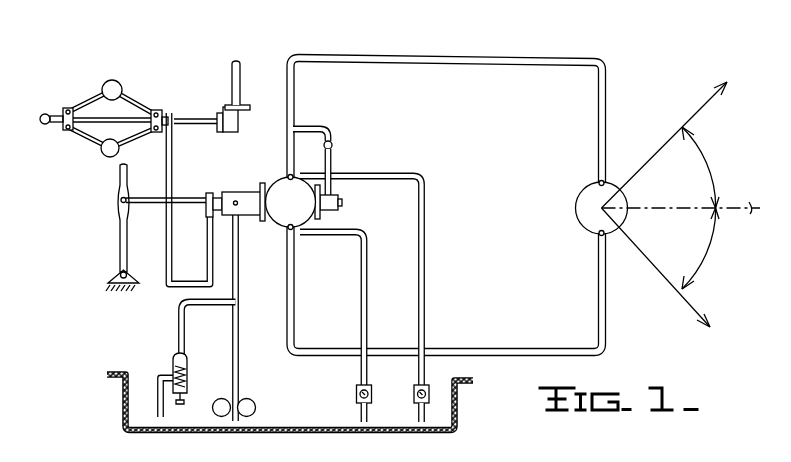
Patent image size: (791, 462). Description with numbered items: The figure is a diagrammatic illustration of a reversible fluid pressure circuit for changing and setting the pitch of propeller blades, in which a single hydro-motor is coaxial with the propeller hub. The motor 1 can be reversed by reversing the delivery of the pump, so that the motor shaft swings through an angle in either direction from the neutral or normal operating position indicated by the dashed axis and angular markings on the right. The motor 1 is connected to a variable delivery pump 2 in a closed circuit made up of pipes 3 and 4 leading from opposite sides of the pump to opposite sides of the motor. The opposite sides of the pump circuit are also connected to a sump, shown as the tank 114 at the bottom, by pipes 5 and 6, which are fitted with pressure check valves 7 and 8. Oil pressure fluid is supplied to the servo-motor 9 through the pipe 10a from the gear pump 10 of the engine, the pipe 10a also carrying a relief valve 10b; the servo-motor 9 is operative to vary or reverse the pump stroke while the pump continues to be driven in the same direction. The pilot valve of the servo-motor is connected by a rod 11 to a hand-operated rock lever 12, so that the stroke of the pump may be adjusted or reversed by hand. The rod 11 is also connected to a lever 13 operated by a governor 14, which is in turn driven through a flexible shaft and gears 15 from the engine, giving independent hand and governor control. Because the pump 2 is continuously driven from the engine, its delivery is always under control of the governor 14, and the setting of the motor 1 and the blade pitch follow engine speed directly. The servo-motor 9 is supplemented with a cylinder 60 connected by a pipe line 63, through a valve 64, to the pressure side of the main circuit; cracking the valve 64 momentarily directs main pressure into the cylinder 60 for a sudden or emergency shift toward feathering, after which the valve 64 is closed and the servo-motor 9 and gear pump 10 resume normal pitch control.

The motor 1 is at (597, 237).
The variable delivery pump 2 is at (291, 202).
The pipe 3 is at (456, 44).
The pipe 4 is at (496, 349).
The pipe 5 is at (367, 300).
The pipe 6 is at (425, 306).
The pressure check valve 7 is at (366, 410).
The pressure check valve 8 is at (424, 410).
The servo-motor 9 is at (243, 192).
The gear pump 10 is at (255, 412).
The pipe 10a is at (238, 273).
The pressure limiting valve 10b is at (172, 364).
The rod 11 is at (194, 205).
The hand-operated rock lever 12 is at (118, 178).
The lever 13 is at (173, 166).
The governor 14 is at (135, 96).
The flexible shaft and gears 15 is at (225, 130).
The cylinder 60 is at (338, 206).
The pipe line 63 is at (332, 191).
The valve 64 is at (338, 145).
The oil tank 114 is at (123, 404).